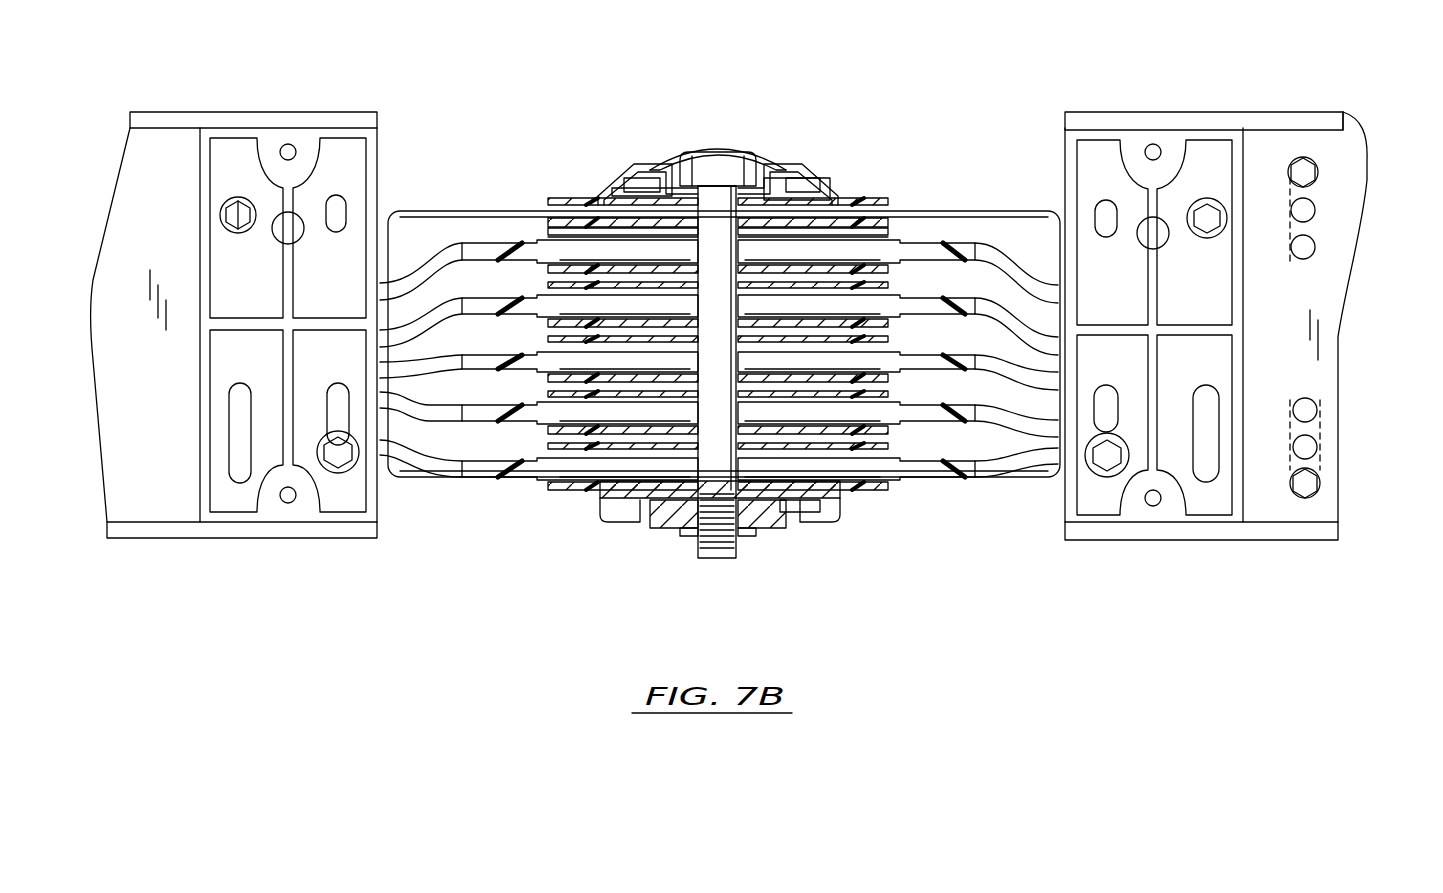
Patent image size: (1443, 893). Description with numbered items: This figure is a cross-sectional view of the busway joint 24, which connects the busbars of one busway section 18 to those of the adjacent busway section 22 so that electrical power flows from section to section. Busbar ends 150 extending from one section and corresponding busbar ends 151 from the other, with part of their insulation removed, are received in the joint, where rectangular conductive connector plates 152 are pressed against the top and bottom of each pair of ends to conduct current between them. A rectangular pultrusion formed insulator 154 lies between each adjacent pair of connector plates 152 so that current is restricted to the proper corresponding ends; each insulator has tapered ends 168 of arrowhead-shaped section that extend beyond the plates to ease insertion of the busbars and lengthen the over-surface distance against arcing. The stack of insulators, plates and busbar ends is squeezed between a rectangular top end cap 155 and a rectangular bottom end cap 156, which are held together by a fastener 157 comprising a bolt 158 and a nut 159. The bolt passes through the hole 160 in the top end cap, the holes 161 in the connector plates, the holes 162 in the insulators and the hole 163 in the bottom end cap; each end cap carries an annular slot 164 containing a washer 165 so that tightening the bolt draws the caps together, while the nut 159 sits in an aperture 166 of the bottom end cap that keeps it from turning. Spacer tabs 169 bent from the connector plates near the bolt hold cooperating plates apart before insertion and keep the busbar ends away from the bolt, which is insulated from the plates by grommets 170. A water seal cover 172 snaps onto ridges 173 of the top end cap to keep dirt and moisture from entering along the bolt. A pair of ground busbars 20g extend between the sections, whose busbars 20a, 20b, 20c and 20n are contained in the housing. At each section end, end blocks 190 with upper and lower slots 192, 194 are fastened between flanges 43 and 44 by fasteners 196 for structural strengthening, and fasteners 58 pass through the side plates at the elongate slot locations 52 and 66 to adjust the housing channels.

The busway section 18 is at (183, 70).
The busway section 22 is at (1240, 105).
The busway joint 24 is at (792, 46).
The flange 43 is at (262, 112).
The flange 44 is at (165, 535).
The elongate slot location 52 is at (1322, 418).
The fastener 58 is at (1318, 172).
The upper elongate slot location 66 is at (1320, 230).
The end block 190 is at (200, 238).
The upper slot 192 is at (336, 200).
The lower slot 194 is at (240, 388).
The fastener 196 is at (222, 216).
The busbar 20a is at (1062, 268).
The busbar 20b is at (1062, 294).
The busbar 20c is at (1062, 348).
The busbar 20n is at (1062, 378).
The ground busbar 20g is at (400, 208).
The busbar end 150 is at (572, 240).
The busbar end 151 is at (860, 262).
The connector plate 152 is at (882, 232).
The pultrusion formed insulator 154 is at (990, 250).
The top end cap 155 is at (612, 170).
The bottom end cap 156 is at (810, 525).
The fastener 157 is at (722, 572).
The bolt 158 is at (718, 158).
The nut 159 is at (692, 540).
The hole 160 is at (768, 178).
The hole 161 is at (842, 245).
The hole 162 is at (662, 494).
The hole 163 is at (748, 530).
The annular slot 164 is at (628, 184).
The washer 165 is at (796, 190).
The aperture 166 is at (672, 520).
The tapered end 168 is at (468, 250).
The spacer tab 169 is at (582, 486).
The grommet 170 is at (662, 300).
The water seal cover 172 is at (730, 148).
The ridge 173 is at (640, 186).